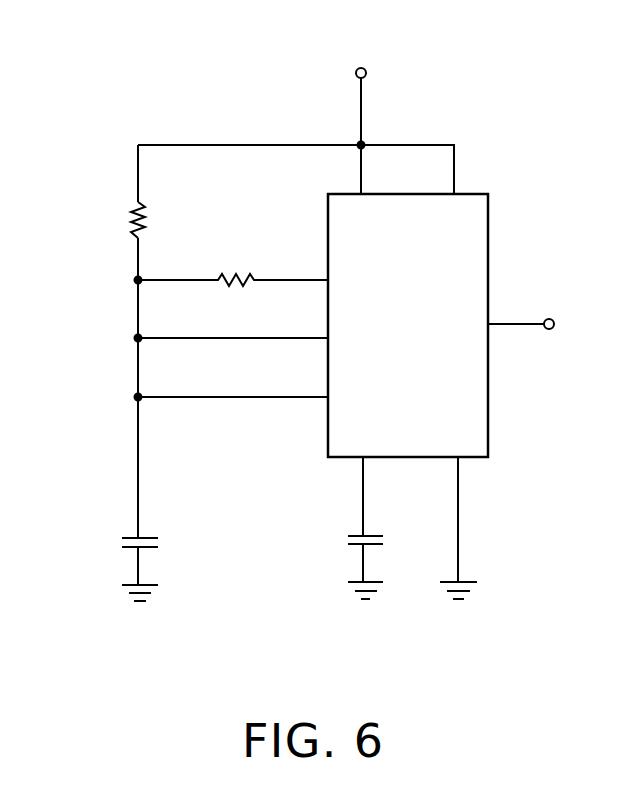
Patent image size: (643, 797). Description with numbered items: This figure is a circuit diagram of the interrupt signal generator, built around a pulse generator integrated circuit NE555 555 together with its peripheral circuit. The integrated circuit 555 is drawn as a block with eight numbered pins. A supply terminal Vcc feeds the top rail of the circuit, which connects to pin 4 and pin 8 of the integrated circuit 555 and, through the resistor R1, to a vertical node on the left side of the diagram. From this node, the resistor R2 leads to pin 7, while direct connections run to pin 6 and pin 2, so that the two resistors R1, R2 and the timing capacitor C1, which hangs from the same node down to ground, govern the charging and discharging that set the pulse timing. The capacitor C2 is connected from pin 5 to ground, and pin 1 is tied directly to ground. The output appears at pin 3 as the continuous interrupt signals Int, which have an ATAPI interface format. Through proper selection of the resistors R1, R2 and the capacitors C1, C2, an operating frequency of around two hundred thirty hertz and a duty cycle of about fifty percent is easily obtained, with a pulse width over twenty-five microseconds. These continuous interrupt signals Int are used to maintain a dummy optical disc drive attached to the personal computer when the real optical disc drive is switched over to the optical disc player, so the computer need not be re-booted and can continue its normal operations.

The resistor R1 is at (97, 228).
The resistor R2 is at (233, 248).
The capacitor C1 is at (115, 558).
The capacitor C2 is at (339, 556).
The integrated circuit NE555 555 is at (408, 325).
The supply voltage terminal Vcc is at (352, 112).
The interrupt signals Int is at (549, 329).
The pin 1 ground 1 is at (458, 509).
The pin 2 trigger 2 is at (329, 393).
The pin 3 output 3 is at (508, 333).
The pin 4 reset 4 is at (358, 190).
The pin 5 control voltage 5 is at (362, 477).
The pin 6 threshold 6 is at (328, 334).
The pin 7 discharge 7 is at (328, 274).
The pin 8 Vcc 8 is at (453, 190).